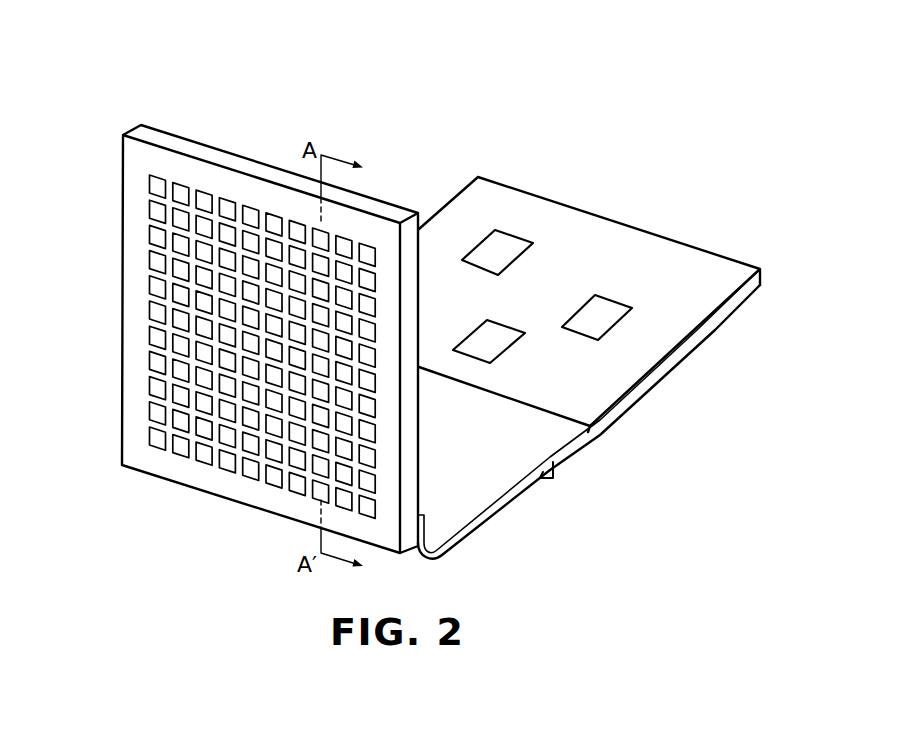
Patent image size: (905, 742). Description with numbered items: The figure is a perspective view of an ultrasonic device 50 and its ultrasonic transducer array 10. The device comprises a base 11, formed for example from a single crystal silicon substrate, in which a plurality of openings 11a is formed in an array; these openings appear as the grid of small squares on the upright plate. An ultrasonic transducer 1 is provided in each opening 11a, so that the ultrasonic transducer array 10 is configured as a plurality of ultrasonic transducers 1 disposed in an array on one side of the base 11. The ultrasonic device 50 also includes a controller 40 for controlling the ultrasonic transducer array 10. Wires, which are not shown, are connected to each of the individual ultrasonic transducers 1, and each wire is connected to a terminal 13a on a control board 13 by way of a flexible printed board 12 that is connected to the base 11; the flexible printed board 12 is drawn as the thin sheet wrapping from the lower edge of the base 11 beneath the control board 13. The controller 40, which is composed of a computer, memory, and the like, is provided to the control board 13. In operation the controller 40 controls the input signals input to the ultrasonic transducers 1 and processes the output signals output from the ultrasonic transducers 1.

The ultrasonic transducer 1 is at (156, 258).
The ultrasonic transducer array 10 is at (240, 300).
The base 11 is at (237, 160).
The opening 11a is at (153, 179).
The flexible printed board 12 is at (478, 503).
The control board 13 is at (600, 310).
The terminal 13a is at (538, 436).
The controller 40 is at (582, 232).
The ultrasonic device 50 is at (422, 287).